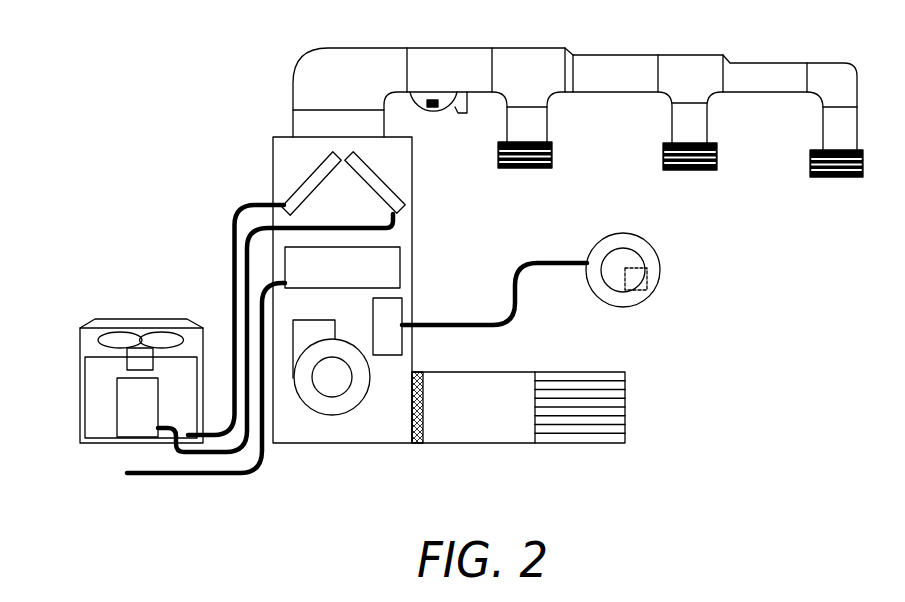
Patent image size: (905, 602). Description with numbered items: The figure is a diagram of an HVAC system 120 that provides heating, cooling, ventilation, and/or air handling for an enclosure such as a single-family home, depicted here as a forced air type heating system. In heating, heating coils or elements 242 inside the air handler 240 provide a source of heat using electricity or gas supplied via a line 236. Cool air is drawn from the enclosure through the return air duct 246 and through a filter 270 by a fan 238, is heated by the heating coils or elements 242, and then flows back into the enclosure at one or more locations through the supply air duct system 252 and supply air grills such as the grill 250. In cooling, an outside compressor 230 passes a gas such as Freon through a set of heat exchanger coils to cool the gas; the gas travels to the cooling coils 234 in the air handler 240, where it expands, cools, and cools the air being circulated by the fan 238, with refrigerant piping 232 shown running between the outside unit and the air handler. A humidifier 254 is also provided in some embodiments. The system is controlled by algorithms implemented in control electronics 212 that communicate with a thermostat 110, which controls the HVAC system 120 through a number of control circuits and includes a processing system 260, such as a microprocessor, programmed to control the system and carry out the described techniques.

The HVAC system 120 is at (122, 40).
The thermostat 110 is at (660, 267).
The control electronics 212 is at (402, 308).
The outside compressor 230 is at (147, 318).
The refrigerant line 232 is at (233, 233).
The cooling coils 234 is at (302, 180).
The line 236 is at (235, 474).
The fan 238 is at (340, 408).
The air handler 240 is at (273, 137).
The heating coils or elements 242 is at (342, 267).
The return air duct 246 is at (625, 413).
The supply air grill 250 is at (552, 155).
The supply air duct system 252 is at (610, 55).
The humidifier 254 is at (438, 116).
The processing system 260 is at (647, 282).
The filter 270 is at (417, 440).